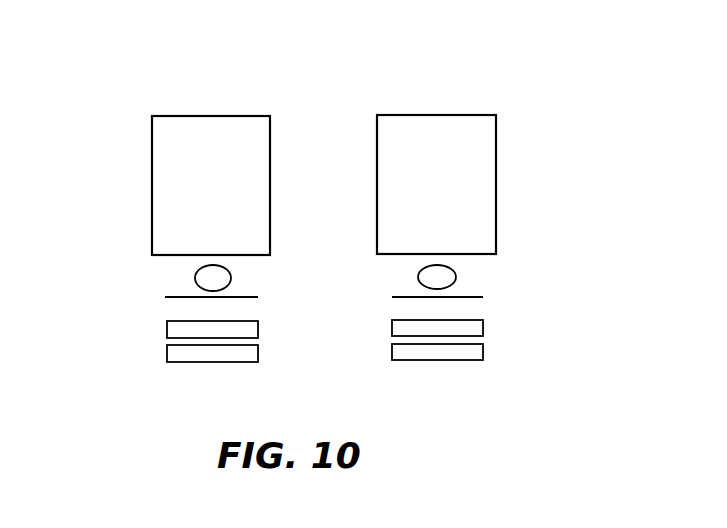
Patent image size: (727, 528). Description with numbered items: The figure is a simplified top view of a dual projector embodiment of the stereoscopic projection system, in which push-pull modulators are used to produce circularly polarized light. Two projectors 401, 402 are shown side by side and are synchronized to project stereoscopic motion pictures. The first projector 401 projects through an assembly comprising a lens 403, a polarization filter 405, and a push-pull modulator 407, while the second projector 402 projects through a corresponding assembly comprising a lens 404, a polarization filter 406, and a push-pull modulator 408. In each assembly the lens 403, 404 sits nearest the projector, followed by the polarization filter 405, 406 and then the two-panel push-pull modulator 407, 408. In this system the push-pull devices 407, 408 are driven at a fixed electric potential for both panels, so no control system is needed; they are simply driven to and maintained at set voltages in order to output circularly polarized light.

The projector 401 is at (203, 116).
The projector 402 is at (496, 163).
The lens 403 is at (195, 278).
The lens 404 is at (456, 277).
The polarization filter 405 is at (177, 298).
The polarization filter 406 is at (470, 297).
The push-pull modulator 407 is at (277, 314).
The push-pull modulator 408 is at (498, 313).